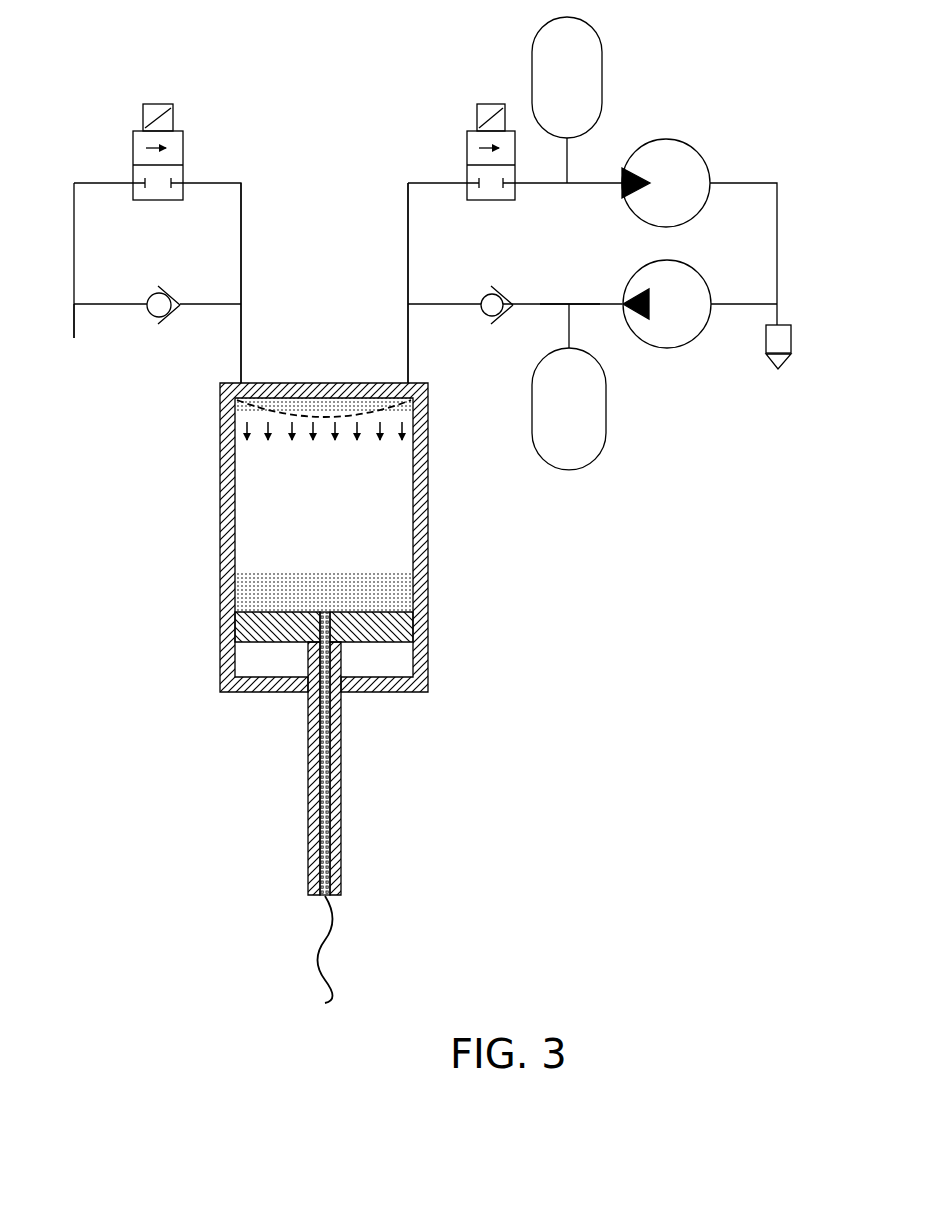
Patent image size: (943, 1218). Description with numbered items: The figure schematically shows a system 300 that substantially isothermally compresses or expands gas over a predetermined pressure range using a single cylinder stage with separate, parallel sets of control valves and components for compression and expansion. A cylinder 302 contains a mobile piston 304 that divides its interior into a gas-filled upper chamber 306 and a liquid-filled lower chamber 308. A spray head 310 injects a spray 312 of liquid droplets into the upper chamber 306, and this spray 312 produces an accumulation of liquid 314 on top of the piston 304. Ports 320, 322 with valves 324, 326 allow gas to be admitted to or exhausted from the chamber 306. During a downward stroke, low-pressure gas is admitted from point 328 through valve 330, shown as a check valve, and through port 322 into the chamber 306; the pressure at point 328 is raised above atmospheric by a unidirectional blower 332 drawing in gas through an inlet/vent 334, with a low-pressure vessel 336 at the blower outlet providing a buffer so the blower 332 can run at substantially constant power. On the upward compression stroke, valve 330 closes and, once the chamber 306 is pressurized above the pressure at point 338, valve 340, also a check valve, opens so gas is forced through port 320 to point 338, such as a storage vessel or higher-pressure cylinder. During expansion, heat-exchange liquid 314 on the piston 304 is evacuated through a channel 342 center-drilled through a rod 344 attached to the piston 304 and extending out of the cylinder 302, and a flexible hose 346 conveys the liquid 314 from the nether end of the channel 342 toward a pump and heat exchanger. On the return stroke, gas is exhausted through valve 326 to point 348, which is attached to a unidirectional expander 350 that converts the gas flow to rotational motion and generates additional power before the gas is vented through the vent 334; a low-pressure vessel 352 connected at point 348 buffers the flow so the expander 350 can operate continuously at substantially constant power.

The system 300 is at (250, 72).
The cylinder 302 is at (220, 518).
The piston 304 is at (240, 626).
The chamber 306 is at (403, 490).
The chamber 308 is at (403, 658).
The spray head 310 is at (320, 405).
The spray 312 is at (403, 425).
The liquid 314 is at (403, 593).
The port 320 is at (243, 382).
The port 322 is at (407, 382).
The valve 324 is at (134, 131).
The valve 326 is at (468, 131).
The point 328 is at (567, 303).
The valve 330 is at (502, 278).
The blower 332 is at (667, 349).
The inlet/vent 334 is at (792, 334).
The low-pressure vessel 336 is at (606, 407).
The point 338 is at (74, 320).
The valve 340 is at (157, 294).
The channel 342 is at (330, 773).
The rod 344 is at (308, 772).
The flexible hose 346 is at (318, 946).
The point 348 is at (567, 185).
The expander 350 is at (664, 139).
The low-pressure vessel 352 is at (603, 58).